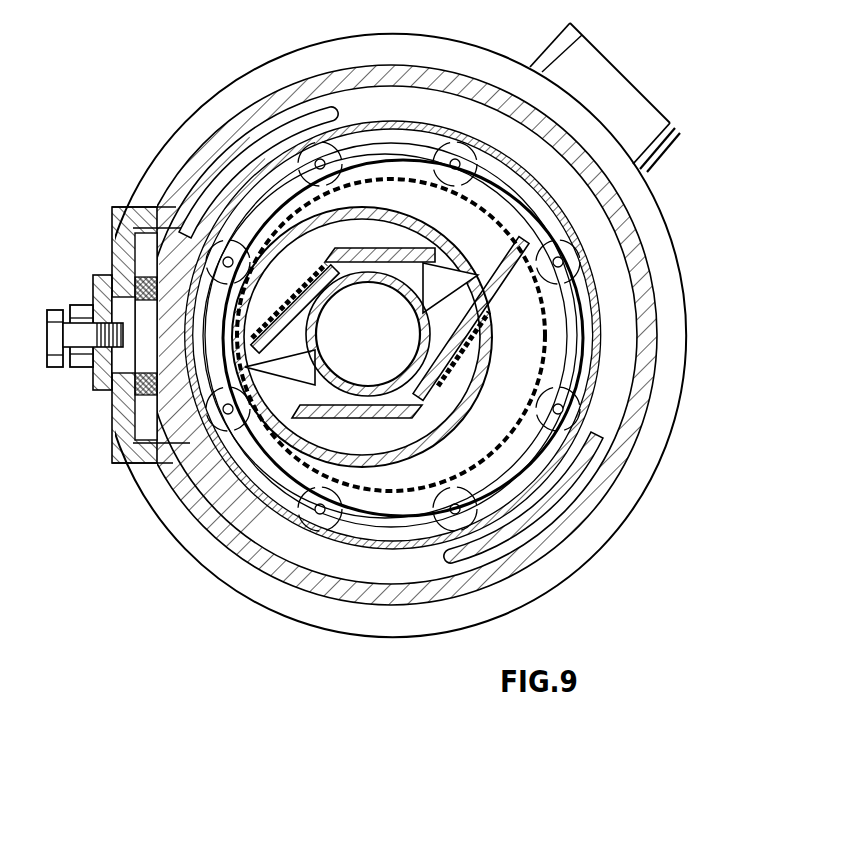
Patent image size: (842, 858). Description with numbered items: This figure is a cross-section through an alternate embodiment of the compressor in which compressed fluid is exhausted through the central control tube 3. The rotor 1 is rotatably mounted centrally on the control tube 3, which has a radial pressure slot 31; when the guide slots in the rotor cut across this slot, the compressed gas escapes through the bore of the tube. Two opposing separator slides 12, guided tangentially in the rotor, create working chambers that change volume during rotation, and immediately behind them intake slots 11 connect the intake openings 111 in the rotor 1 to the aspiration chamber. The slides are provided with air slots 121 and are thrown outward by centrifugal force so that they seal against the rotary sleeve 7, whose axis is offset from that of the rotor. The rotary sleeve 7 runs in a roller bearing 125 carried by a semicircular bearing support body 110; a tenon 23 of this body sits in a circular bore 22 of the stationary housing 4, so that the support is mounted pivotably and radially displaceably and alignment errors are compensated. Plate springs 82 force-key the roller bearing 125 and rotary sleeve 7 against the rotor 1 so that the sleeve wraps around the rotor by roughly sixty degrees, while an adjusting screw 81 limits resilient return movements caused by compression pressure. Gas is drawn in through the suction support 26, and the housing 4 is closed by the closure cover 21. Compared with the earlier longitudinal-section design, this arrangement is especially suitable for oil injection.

The rotor 1 is at (480, 395).
The control tube 3 is at (353, 283).
The stationary housing 4 is at (233, 127).
The rotary sleeve 7 is at (473, 200).
The intake slots 11 is at (475, 275).
The separator slides 12 is at (500, 280).
The closure cover 21 is at (116, 207).
The circular bore 22 is at (130, 250).
The tenon 23 is at (182, 223).
The suction support 26 is at (627, 97).
The pressure slot 31 is at (332, 382).
The adjusting screw 81 is at (56, 365).
The plate springs 82 is at (127, 390).
The bearing support body 110 is at (303, 130).
The intake openings 111 is at (435, 275).
The air slots 121 is at (489, 326).
The roller bearing 125 is at (399, 150).